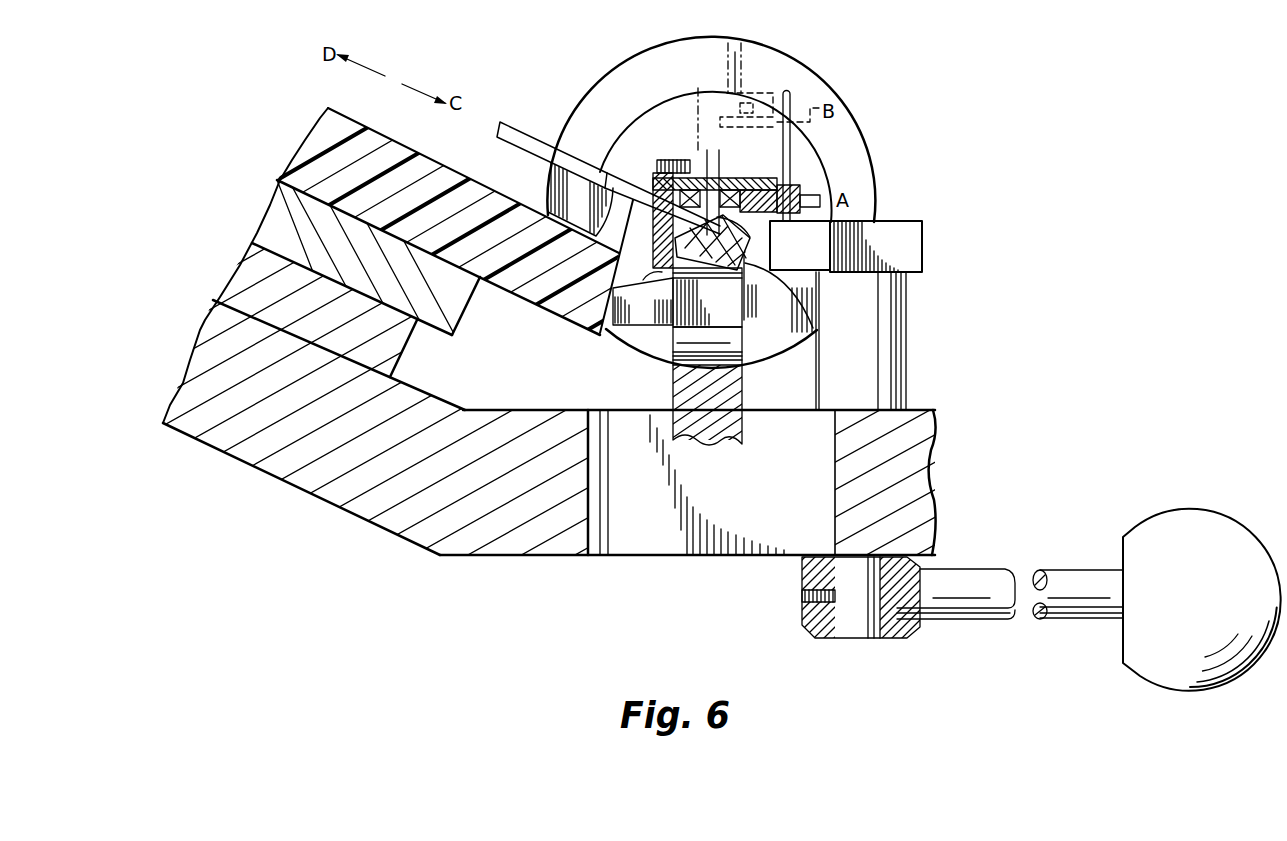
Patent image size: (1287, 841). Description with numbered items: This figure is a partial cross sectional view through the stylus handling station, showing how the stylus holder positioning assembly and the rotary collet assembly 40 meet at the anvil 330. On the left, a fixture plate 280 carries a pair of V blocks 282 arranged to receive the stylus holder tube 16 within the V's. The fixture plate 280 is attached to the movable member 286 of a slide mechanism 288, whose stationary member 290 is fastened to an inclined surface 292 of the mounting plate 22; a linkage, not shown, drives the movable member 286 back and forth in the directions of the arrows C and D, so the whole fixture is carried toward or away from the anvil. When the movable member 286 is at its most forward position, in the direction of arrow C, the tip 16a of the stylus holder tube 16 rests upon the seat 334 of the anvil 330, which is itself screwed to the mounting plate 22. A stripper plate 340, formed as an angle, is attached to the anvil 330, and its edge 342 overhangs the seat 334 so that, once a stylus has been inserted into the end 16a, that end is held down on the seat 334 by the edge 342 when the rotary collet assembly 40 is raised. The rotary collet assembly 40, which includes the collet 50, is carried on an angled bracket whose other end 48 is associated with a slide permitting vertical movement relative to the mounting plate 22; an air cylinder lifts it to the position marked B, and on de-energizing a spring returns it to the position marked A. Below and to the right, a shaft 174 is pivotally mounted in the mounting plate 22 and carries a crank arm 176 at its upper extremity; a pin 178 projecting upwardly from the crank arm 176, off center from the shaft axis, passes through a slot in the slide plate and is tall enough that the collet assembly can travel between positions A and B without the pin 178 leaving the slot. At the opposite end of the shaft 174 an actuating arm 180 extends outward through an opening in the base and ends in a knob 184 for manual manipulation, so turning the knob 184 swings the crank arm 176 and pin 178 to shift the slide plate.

The stylus holder tube 16 is at (532, 138).
The tip of the stylus holder tube 16a is at (643, 298).
The mounting plate 22 is at (935, 410).
The rotary collet assembly 40 is at (840, 172).
The other end of the bracket 48 is at (675, 382).
The collet 50 is at (718, 179).
The shaft 174 is at (905, 370).
The crank arm 176 is at (920, 240).
The pin 178 is at (790, 152).
The actuating arm 180 is at (987, 568).
The knob 184 is at (1140, 528).
The fixture plate 280 is at (455, 168).
The V blocks 282 is at (640, 170).
The movable member 286 is at (463, 308).
The slide mechanism 288 is at (267, 172).
The stationary member 290 is at (400, 350).
The inclined surface 292 is at (465, 410).
The anvil 330 is at (707, 316).
The seat 334 is at (647, 250).
The stripper plate 340 is at (778, 293).
The edge of the stripper plate 342 is at (771, 240).